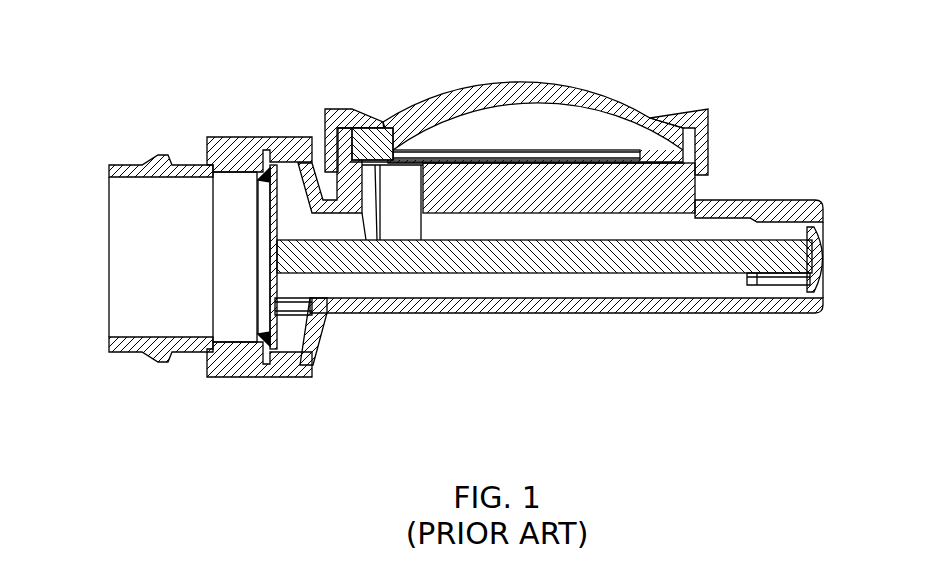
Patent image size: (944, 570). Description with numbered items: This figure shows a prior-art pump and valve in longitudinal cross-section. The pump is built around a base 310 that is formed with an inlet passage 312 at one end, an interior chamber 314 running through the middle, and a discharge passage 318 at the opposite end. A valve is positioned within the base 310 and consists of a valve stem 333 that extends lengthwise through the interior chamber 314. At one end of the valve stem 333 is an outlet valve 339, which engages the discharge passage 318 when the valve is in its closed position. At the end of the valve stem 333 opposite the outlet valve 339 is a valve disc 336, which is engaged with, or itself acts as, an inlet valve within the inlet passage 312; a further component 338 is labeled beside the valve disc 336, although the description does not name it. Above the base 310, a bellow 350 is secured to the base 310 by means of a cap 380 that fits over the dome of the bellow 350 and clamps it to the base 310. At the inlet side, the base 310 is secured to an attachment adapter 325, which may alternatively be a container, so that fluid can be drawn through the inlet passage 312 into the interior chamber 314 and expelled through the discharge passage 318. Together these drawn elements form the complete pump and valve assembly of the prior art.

The attachment adapter 325 is at (104, 173).
The inlet passage 312 is at (235, 257).
The collet 338 is at (271, 165).
The valve disc 336 is at (277, 306).
The base 310 is at (362, 300).
The valve stem 333 is at (617, 287).
The discharge passage 318 is at (831, 249).
The interior chamber 314 is at (518, 280).
The outlet valve 339 is at (811, 265).
The bellow 350 is at (560, 93).
The cap 380 is at (688, 106).